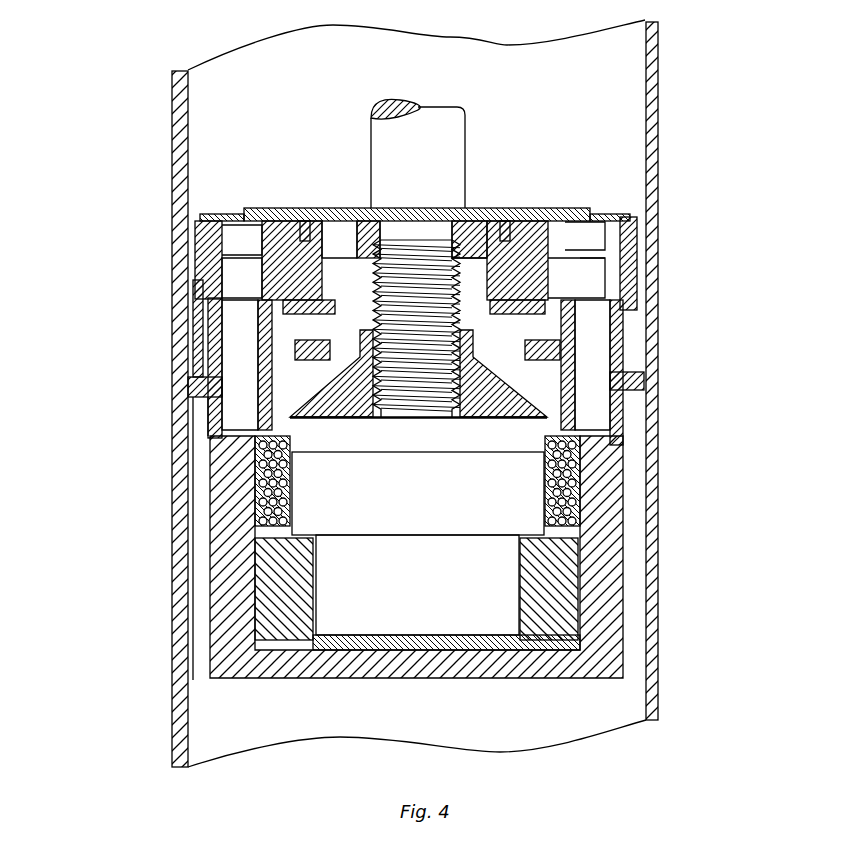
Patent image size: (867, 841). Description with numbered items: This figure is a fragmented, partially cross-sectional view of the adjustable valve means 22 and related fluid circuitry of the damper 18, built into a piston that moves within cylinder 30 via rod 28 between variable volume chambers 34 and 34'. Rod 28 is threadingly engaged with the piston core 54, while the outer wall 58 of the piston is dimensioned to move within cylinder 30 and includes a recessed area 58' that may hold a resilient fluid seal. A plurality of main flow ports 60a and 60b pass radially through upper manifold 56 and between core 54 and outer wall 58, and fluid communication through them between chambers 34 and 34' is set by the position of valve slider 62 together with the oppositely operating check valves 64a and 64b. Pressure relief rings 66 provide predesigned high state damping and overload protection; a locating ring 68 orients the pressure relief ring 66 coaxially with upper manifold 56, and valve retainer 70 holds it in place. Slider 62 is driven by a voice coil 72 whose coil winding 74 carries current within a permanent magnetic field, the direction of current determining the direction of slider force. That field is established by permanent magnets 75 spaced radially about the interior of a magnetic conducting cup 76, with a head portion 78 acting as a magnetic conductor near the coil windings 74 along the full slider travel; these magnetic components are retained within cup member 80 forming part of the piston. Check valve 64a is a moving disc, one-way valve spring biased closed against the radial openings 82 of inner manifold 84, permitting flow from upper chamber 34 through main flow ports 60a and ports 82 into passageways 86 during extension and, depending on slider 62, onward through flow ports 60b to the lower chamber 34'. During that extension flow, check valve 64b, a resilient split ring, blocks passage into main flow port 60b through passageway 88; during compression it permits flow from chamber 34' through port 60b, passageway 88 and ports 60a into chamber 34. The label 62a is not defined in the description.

The damper 18 is at (135, 148).
The adjustable valve means 22 is at (205, 458).
The rod 28 is at (466, 155).
The cylinder 30 is at (660, 107).
The variable volume chamber 34 is at (507, 93).
The variable volume chamber 34' is at (427, 713).
The piston core 54 is at (215, 430).
The upper manifold 56 is at (300, 221).
The outer wall 58 is at (183, 294).
The recessed area 58' is at (183, 260).
The main flow port 60a is at (364, 282).
The main flow port 60b is at (262, 324).
The valve slider 62 is at (630, 382).
The tube end 62a is at (570, 340).
The check valve 64a is at (560, 230).
The check valve 64b is at (575, 360).
The pressure relief ring 66 is at (215, 212).
The locating ring 68 is at (590, 222).
The valve retainer 70 is at (575, 222).
The voice coil 72 is at (580, 530).
The coil winding 74 is at (562, 470).
The permanent magnets 75 is at (310, 568).
The magnetic conducting cup 76 is at (416, 598).
The head portion 78 is at (421, 503).
The cup member 80 is at (210, 493).
The radial openings 82 is at (305, 221).
The inner manifold 84 is at (300, 300).
The passageways 86 is at (636, 250).
The passageway 88 is at (300, 340).